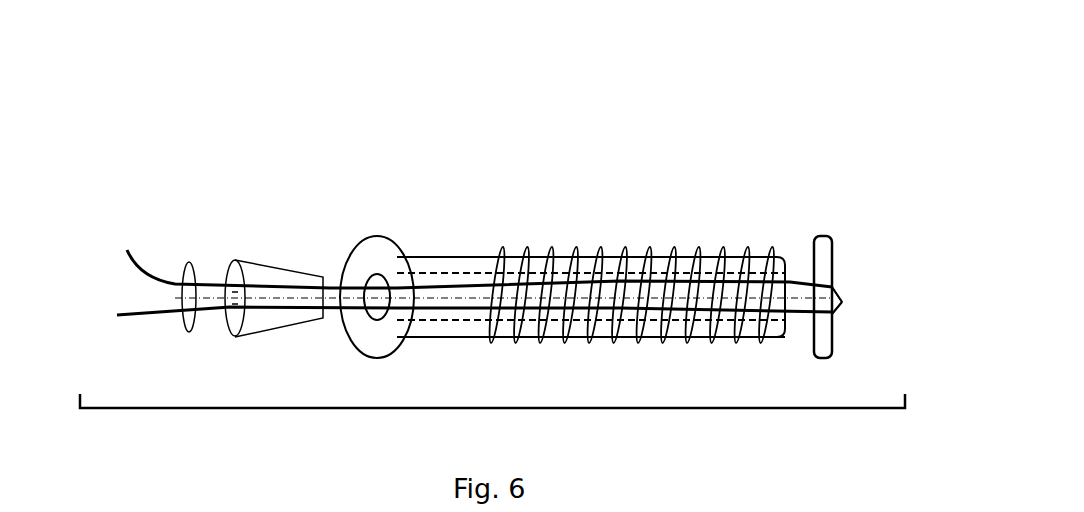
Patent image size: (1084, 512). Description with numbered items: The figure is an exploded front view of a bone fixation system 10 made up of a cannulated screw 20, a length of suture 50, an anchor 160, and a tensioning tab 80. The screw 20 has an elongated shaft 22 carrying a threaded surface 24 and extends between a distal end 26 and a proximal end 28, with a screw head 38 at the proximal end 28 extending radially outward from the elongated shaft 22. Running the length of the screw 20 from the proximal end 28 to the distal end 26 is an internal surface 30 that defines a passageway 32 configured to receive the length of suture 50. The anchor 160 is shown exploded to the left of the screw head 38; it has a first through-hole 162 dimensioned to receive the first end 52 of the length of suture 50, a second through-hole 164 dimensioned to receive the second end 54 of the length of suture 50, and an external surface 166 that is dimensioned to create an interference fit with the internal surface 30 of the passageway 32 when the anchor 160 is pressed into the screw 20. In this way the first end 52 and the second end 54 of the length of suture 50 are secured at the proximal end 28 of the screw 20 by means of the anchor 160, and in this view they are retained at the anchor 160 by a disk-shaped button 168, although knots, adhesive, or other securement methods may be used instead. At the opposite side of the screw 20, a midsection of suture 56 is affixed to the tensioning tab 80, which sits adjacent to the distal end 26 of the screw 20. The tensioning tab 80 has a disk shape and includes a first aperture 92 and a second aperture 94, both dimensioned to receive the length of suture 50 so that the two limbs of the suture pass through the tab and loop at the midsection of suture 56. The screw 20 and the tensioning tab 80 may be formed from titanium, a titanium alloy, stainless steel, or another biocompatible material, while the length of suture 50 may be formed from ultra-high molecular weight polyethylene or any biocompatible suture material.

The bone fixation system 10 is at (160, 80).
The screw 20 is at (638, 252).
The elongated shaft 22 is at (475, 255).
The threaded surface 24 is at (590, 248).
The distal end 26 is at (773, 347).
The proximal end 28 is at (492, 173).
The internal surface 30 is at (370, 277).
The passageway 32 is at (363, 317).
The screw head 38 is at (393, 240).
The length of suture 50 is at (449, 273).
The first end 52 is at (123, 235).
The second end 54 is at (110, 327).
The midsection of suture 56 is at (850, 302).
The tensioning tab 80 is at (830, 238).
The first aperture 92 is at (833, 283).
The second aperture 94 is at (833, 316).
The anchor 160 is at (231, 279).
The first through-hole 162 is at (230, 270).
The second through-hole 164 is at (230, 310).
The external surface 166 is at (273, 330).
The button 168 is at (180, 320).